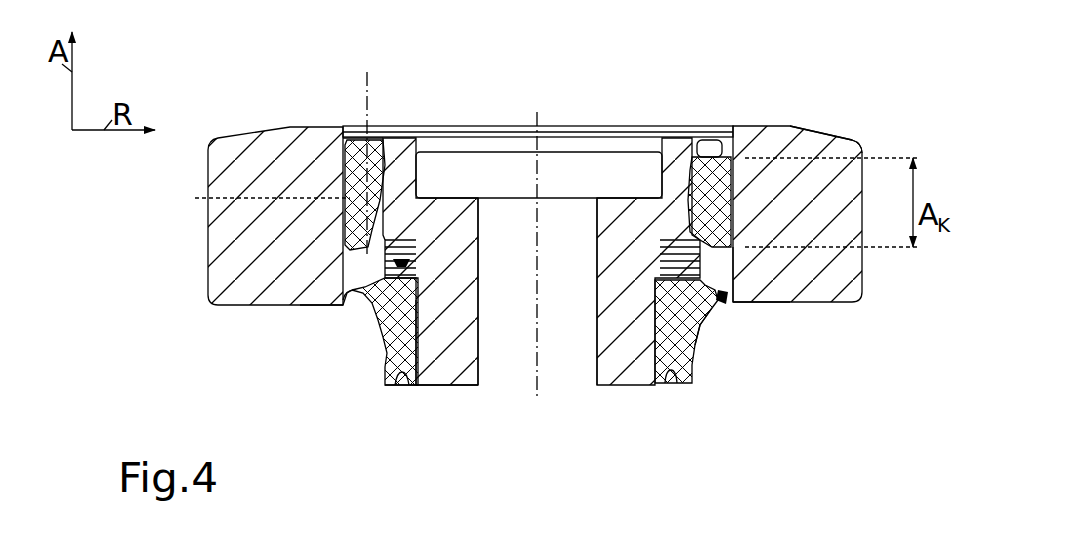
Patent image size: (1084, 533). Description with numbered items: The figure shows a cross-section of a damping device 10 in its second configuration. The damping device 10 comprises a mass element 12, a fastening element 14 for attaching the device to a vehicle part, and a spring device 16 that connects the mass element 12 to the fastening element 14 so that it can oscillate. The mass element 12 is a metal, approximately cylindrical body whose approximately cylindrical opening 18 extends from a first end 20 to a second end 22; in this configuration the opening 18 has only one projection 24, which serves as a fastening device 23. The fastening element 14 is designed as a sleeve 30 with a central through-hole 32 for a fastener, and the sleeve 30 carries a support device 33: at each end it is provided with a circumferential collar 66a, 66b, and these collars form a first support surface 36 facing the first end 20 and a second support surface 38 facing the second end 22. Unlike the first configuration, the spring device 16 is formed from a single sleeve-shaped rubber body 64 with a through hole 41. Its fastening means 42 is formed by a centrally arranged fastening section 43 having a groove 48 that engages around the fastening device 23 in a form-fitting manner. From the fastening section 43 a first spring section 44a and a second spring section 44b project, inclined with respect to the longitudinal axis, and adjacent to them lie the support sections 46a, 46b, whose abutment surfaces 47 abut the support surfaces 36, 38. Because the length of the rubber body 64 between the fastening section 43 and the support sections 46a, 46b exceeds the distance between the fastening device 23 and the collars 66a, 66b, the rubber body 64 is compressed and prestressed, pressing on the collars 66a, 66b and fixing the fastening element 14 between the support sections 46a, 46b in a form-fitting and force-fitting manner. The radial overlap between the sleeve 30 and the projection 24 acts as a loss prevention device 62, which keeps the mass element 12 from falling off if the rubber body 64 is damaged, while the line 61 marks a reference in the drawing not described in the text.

The damping device 10 is at (753, 120).
The mass element 12 is at (778, 152).
The fastening element 14 is at (672, 168).
The spring device 16 is at (710, 325).
The opening 18 is at (726, 155).
The first end 20 is at (312, 125).
The second end 22 is at (320, 312).
The fastening device 23 is at (722, 305).
The projection 24 is at (710, 262).
The sleeve 30 is at (430, 215).
The central through-hole 32 is at (505, 365).
The support device 33 is at (702, 124).
The first support surface 36 is at (822, 162).
The second support surface 38 is at (410, 300).
The through hole 41 is at (413, 305).
The fastening means 42 is at (393, 264).
The fastening section 43 is at (702, 264).
The first spring section 44a is at (242, 199).
The second spring section 44b is at (380, 308).
The first support section 46a is at (395, 140).
The second support section 46b is at (376, 345).
The abutment surface 47 is at (707, 160).
The groove 48 is at (728, 283).
The reference line 61 is at (367, 80).
The loss prevention device 62 is at (367, 123).
The rubber body 64 is at (383, 345).
The first circumferential collar 66a is at (692, 148).
The second circumferential collar 66b is at (667, 370).